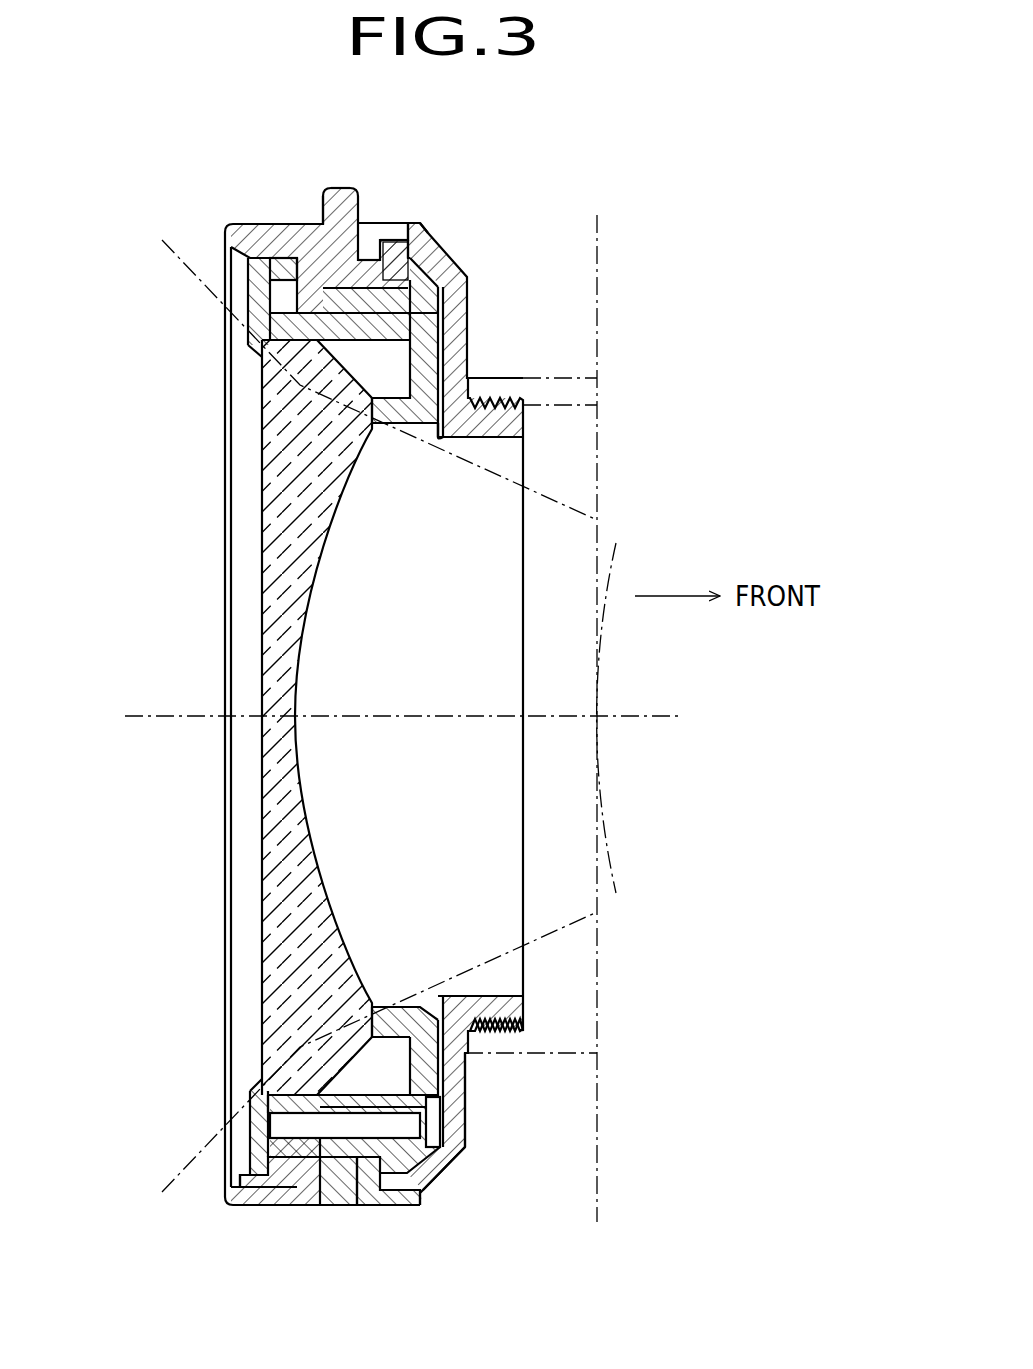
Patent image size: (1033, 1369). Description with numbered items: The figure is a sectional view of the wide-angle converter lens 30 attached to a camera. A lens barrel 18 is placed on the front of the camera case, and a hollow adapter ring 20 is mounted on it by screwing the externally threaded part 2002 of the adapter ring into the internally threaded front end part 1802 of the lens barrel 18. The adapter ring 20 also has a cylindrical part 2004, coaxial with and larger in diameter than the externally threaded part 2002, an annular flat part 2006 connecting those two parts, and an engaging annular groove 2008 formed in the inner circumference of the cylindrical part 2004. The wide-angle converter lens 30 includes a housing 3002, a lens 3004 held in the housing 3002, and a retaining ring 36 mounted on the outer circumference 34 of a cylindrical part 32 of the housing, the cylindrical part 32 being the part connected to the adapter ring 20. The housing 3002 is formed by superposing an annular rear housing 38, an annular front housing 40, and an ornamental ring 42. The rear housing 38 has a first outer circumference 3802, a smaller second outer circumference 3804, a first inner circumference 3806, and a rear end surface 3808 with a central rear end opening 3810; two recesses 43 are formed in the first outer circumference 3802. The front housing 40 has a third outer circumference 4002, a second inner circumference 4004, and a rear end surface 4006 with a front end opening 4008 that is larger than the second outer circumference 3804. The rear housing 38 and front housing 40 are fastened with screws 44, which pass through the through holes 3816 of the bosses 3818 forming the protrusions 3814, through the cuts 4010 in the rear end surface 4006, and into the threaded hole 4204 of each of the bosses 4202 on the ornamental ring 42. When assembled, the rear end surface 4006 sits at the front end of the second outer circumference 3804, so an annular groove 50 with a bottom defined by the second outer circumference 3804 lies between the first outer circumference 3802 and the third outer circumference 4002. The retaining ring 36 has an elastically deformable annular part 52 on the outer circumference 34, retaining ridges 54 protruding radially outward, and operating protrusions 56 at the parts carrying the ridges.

The lens barrel 18 is at (575, 378).
The internally threaded front end part 1802 is at (545, 410).
The adapter ring 20 is at (448, 233).
The externally threaded part 2002 is at (518, 1028).
The cylindrical part 2004 is at (408, 1208).
The annular flat part 2006 is at (468, 1105).
The engaging annular groove 2008 is at (438, 243).
The wide-angle converter lens 30 is at (185, 987).
The housing 3002 is at (210, 195).
The lens 3004 is at (275, 567).
The cylindrical part 32 is at (372, 270).
The outer circumference 34 is at (372, 270).
The retaining ring 36 is at (318, 226).
The rear housing 38 is at (440, 338).
The first outer circumference 3802 is at (432, 275).
The second outer circumference 3804 is at (344, 400).
The first inner circumference 3806 is at (278, 333).
The rear end surface 3808 is at (447, 385).
The rear end opening 3810 is at (440, 440).
The protrusions 3814 is at (376, 1160).
The through holes 3816 is at (372, 1110).
The bosses 3818 is at (376, 1160).
The front housing 40 is at (237, 237).
The third outer circumference 4002 is at (263, 223).
The second inner circumference 4004 is at (270, 268).
The rear end surface 4006 is at (330, 242).
The front end opening 4008 is at (268, 353).
The cuts 4010 is at (292, 1152).
The ornamental ring 42 is at (257, 315).
The bosses 4202 is at (296, 1097).
The threaded hole 4204 is at (262, 1150).
The recesses 43 is at (390, 398).
The screws 44 is at (430, 1132).
The annular groove 50 is at (356, 200).
The annular part 52 is at (395, 245).
The retaining ridges 54 is at (430, 228).
The operating protrusions 56 is at (362, 252).